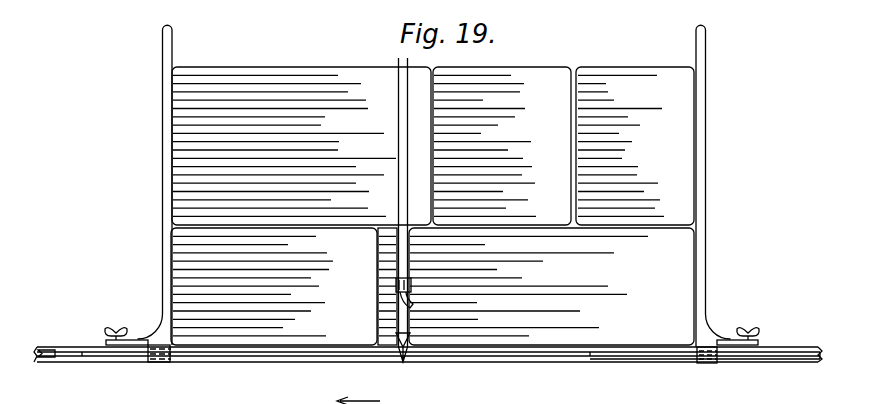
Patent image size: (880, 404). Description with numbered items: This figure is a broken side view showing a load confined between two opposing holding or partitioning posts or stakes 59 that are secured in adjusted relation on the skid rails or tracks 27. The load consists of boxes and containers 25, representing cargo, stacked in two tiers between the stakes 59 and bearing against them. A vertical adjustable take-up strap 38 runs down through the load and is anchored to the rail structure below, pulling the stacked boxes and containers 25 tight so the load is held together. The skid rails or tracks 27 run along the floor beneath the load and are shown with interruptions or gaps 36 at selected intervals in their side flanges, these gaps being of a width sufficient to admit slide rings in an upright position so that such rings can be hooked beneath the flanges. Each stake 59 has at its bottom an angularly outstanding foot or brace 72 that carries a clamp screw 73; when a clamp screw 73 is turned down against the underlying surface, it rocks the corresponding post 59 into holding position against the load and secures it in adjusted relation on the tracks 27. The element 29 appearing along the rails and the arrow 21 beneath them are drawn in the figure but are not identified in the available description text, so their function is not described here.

The holding or partitioning posts or stakes 59 is at (163, 180).
The boxes and containers 25 is at (595, 70).
The take-up straps 38 is at (399, 91).
The interruptions or gaps 36 is at (67, 356).
The slide bar 29 is at (92, 357).
The skid rails or tracks 27 is at (55, 348).
The angularly outstanding feet or braces 72 is at (133, 338).
The clamp screws 73 is at (116, 330).
The direction arrow 21 is at (353, 390).